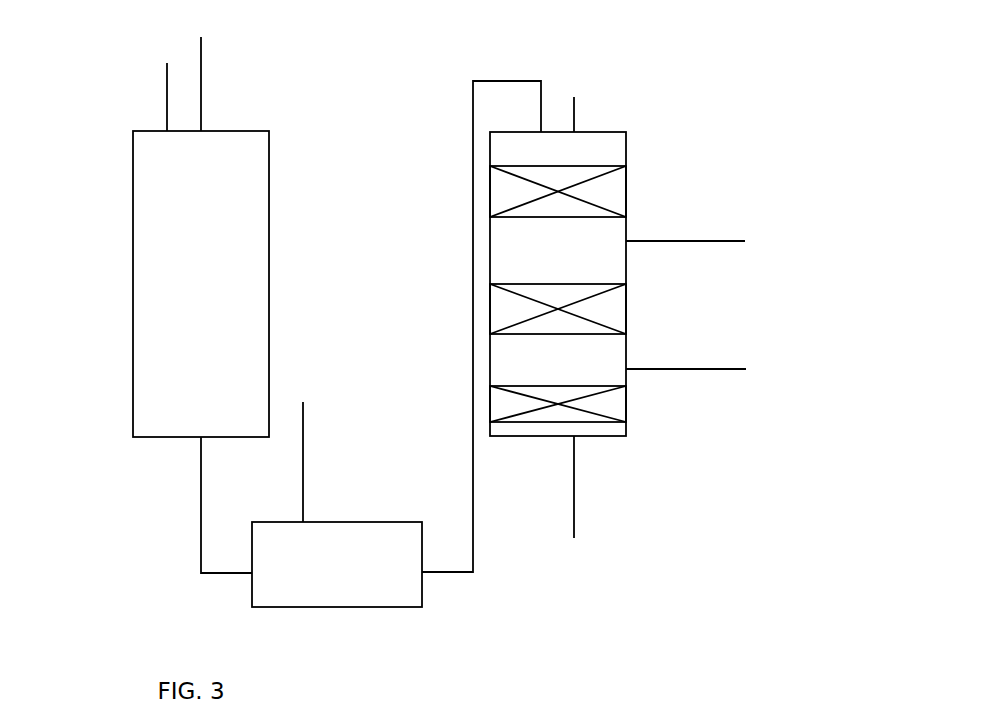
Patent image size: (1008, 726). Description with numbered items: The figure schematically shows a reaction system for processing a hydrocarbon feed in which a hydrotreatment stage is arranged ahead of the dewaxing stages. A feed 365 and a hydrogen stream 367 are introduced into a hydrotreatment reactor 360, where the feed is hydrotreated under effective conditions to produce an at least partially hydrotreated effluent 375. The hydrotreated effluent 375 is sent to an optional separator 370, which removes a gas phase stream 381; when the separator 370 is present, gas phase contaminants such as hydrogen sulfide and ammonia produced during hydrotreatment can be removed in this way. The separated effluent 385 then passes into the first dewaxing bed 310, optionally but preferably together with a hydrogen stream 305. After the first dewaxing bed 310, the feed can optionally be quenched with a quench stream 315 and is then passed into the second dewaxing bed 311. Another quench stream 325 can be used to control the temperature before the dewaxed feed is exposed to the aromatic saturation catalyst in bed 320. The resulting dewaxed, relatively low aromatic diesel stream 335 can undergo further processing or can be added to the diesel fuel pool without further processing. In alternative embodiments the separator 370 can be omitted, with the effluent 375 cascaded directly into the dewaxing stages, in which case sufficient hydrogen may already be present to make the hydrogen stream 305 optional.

The hydrogen stream 305 is at (596, 73).
The dewaxing bed/stage 310 is at (638, 183).
The second dewaxing bed 311 is at (633, 321).
The quench stream 315 is at (745, 226).
The aromatic saturation catalyst bed 320 is at (642, 403).
The quench stream 325 is at (734, 345).
The dewaxed, relatively low aromatic diesel stream 335 is at (625, 488).
The hydrotreatment reactor 360 is at (221, 294).
The feed 365 is at (133, 98).
The hydrogen stream 367 is at (233, 63).
The separator 370 is at (356, 576).
The hydrotreated effluent 375 is at (167, 523).
The gas phase stream 381 is at (327, 420).
The separated effluent 385 is at (452, 178).